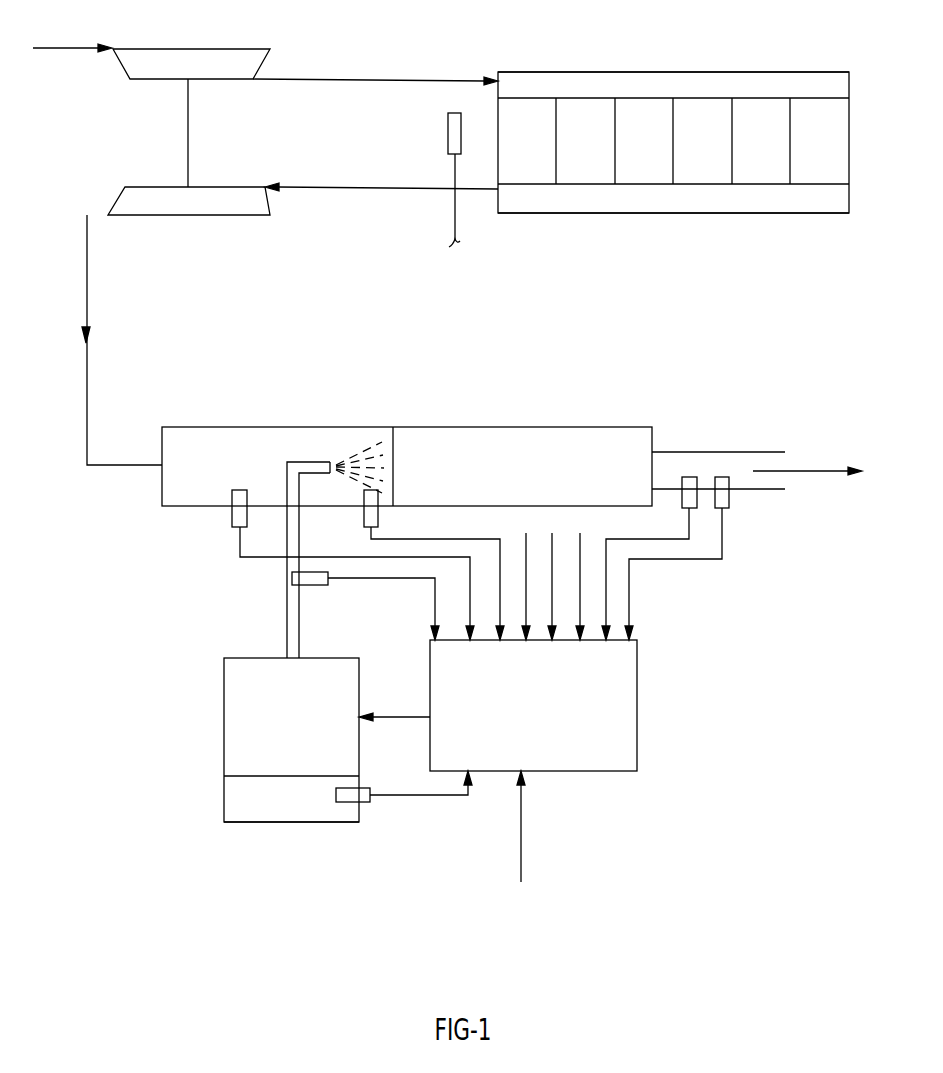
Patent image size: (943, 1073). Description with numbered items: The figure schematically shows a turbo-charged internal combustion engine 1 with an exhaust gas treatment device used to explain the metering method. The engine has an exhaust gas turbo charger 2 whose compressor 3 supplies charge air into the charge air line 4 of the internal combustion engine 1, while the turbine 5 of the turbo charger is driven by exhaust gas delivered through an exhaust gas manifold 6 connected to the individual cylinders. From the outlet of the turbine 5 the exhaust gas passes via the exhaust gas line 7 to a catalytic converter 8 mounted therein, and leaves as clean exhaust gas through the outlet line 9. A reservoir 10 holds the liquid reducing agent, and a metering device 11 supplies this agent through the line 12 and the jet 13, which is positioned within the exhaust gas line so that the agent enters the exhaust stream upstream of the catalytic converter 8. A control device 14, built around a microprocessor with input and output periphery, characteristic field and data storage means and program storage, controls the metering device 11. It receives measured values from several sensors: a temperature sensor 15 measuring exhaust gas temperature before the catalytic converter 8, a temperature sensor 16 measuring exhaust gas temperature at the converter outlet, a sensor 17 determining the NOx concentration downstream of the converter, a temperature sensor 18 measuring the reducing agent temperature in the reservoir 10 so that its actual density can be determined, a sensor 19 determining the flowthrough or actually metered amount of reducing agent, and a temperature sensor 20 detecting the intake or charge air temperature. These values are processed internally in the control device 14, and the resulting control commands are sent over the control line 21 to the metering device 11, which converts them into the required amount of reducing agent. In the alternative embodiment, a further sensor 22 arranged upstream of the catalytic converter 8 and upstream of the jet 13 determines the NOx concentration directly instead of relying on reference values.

The internal combustion engine 1 is at (858, 160).
The exhaust gas turbo charger 2 is at (190, 143).
The compressor 3 is at (235, 48).
The charge air line 4 is at (665, 72).
The turbine 5 is at (228, 215).
The exhaust gas manifold 6 is at (705, 214).
The exhaust gas line 7 is at (88, 392).
The catalytic converter 8 is at (590, 443).
The outlet line 9 is at (735, 452).
The reservoir 10 is at (223, 794).
The metering device 11 is at (223, 710).
The line 12 is at (285, 607).
The jet 13 is at (318, 461).
The control device 14 is at (522, 725).
The temperature sensor 15 is at (362, 520).
The temperature sensor 16 is at (697, 508).
The NOx sensor 17 is at (729, 500).
The temperature sensor 18 is at (368, 803).
The flow sensor 19 is at (316, 587).
The temperature sensor 20 is at (447, 133).
The control line 21 is at (395, 715).
The NOx sensor 22 is at (229, 517).